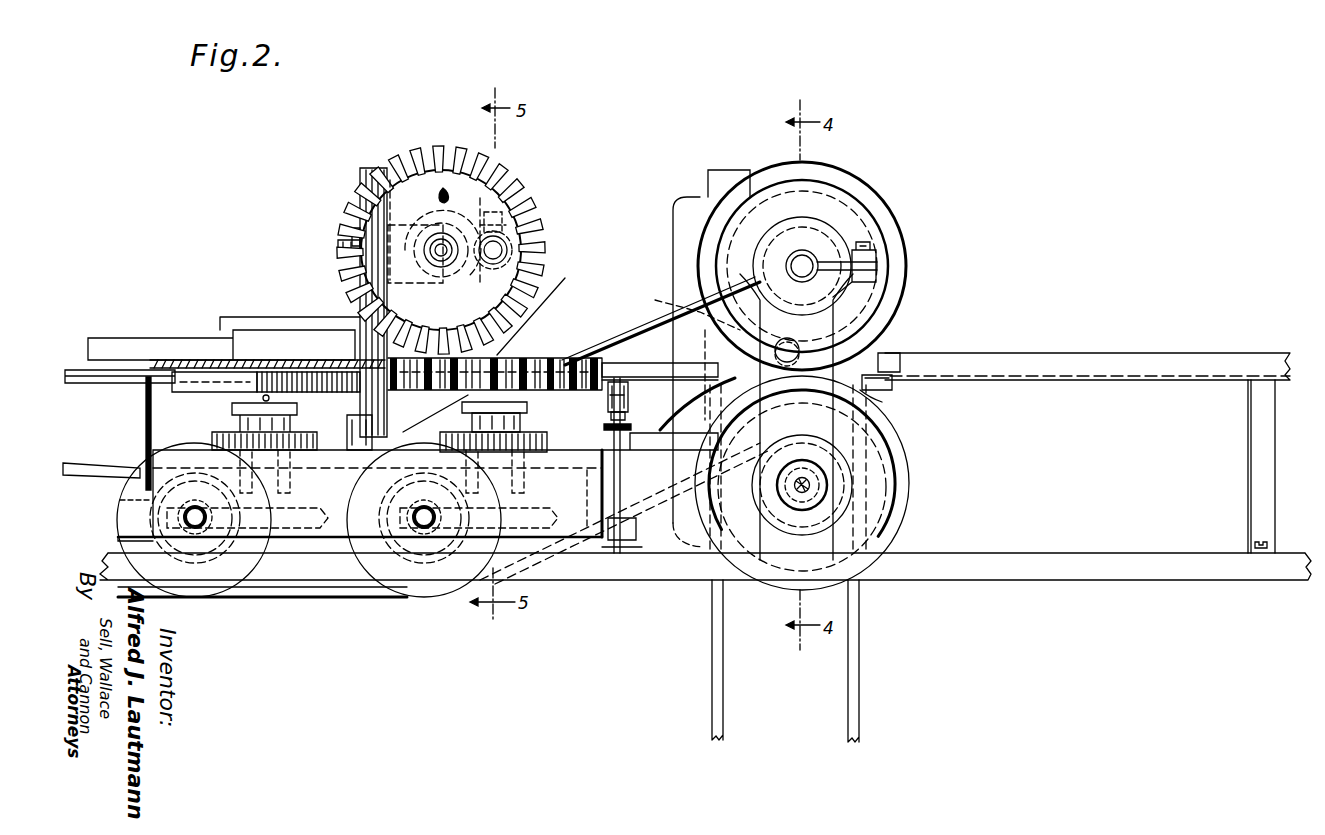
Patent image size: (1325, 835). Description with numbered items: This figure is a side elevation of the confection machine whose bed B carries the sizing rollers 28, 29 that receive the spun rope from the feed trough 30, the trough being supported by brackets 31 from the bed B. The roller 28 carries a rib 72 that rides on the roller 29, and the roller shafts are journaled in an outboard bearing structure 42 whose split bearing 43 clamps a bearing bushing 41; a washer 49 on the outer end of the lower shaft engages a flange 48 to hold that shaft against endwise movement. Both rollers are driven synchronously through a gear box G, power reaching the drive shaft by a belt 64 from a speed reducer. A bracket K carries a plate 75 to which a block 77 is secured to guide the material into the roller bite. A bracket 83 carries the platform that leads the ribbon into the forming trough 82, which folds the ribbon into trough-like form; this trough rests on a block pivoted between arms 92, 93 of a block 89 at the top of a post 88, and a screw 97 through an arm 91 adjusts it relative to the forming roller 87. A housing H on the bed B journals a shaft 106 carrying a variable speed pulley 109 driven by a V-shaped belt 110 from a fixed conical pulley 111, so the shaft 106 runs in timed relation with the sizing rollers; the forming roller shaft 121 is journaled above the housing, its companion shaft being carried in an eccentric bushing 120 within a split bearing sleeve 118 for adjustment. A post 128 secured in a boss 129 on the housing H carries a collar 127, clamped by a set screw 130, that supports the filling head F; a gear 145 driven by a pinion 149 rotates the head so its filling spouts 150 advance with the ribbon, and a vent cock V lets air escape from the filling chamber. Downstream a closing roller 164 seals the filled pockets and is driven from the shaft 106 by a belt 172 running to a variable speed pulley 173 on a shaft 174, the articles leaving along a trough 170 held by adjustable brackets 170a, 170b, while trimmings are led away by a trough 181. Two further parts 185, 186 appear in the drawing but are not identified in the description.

The bed B is at (1079, 552).
The filling head F is at (426, 160).
The vent cock V is at (439, 195).
The gear box G is at (672, 210).
The housing H is at (192, 456).
The bracket K is at (882, 400).
The sizing roller 28 is at (855, 183).
The sizing roller 29 is at (906, 462).
The feed trough 30 is at (1086, 353).
The brackets 31 is at (1250, 440).
The bearing bushing 41 is at (802, 284).
The outboard bearing structure 42 is at (806, 417).
The split bearing 43 is at (878, 258).
The flange 48 is at (805, 498).
The washer 49 is at (803, 475).
The belt 64 is at (855, 690).
The rib 72 is at (828, 240).
The plate 75 is at (886, 378).
The block 77 is at (885, 370).
The forming trough 82 is at (648, 365).
The bracket 83 is at (709, 402).
The forming roller 87 is at (544, 358).
The post 88 is at (600, 477).
The block 89 is at (634, 465).
The arm 91 is at (604, 415).
The arm 92 is at (636, 396).
The arm 93 is at (603, 399).
The screw 97 is at (605, 432).
The shaft 106 is at (418, 516).
The variable speed pulley 109 is at (432, 600).
The V-shaped belt 110 is at (572, 360).
The fixed conical pulley 111 is at (684, 306).
The bearing sleeve 118 is at (528, 426).
The bushing 120 is at (462, 408).
The shaft 121 is at (547, 307).
The collar 127 is at (354, 236).
The post 128 is at (360, 186).
The boss 129 is at (405, 437).
The set screw 130 is at (340, 252).
The gear 145 is at (441, 266).
The pinion 149 is at (443, 268).
The filling spouts 150 is at (513, 258).
The closing roller 164 is at (184, 392).
The trough 170 is at (225, 391).
The adjustable bracket 170a is at (366, 399).
The adjustable bracket 170b is at (142, 438).
The belt 172 is at (295, 598).
The variable speed pulley 173 is at (201, 600).
The shaft 174 is at (185, 515).
The trough 181 is at (120, 338).
The arm 185 is at (70, 462).
The link 186 is at (158, 507).